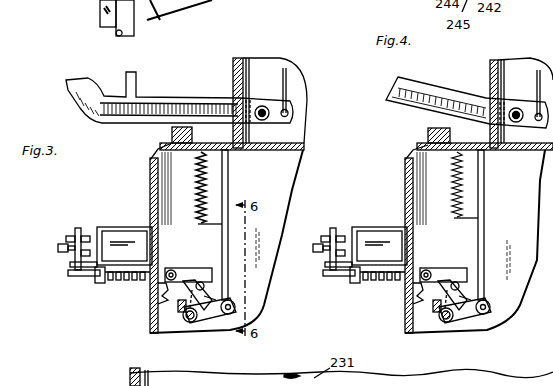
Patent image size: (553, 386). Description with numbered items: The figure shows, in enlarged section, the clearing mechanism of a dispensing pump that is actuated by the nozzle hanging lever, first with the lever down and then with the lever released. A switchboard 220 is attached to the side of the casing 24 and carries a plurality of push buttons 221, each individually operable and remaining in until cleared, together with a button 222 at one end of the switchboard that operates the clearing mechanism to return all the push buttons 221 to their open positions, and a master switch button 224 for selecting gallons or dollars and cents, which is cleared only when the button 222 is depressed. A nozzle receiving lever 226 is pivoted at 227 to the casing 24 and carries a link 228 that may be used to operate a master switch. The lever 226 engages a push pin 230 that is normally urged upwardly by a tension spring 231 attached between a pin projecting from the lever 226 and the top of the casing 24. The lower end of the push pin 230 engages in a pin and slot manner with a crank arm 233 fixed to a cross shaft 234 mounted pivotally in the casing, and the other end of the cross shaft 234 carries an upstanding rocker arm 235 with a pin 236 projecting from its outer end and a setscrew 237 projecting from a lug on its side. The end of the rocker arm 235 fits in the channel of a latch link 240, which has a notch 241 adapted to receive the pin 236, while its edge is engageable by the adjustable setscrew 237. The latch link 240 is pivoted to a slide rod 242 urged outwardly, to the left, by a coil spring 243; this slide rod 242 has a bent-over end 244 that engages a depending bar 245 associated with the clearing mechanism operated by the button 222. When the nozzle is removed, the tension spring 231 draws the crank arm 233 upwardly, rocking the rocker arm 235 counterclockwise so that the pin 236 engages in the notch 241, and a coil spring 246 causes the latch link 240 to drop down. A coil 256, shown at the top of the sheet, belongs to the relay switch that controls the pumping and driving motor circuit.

In FIG. 3, the casing 24 is at (304, 146).
In FIG. 4, the casing 24 is at (404, 193).
In FIG. 3, the switchboard 220 is at (124, 225).
In FIG. 4, the switchboard 220 is at (372, 226).
In FIG. 3, the push buttons 221 is at (68, 248).
In FIG. 4, the push buttons 221 is at (323, 249).
In FIG. 3, the button 222 is at (60, 244).
In FIG. 4, the button 222 is at (320, 244).
In FIG. 3, the master switch button 224 is at (80, 232).
In FIG. 4, the master switch button 224 is at (338, 236).
In FIG. 3, the nozzle receiving lever 226 is at (184, 100).
In FIG. 4, the nozzle receiving lever 226 is at (408, 82).
In FIG. 3, the pivot 227 is at (262, 105).
In FIG. 4, the pivot 227 is at (516, 107).
In FIG. 3, the link 228 is at (287, 80).
In FIG. 4, the link 228 is at (542, 90).
In FIG. 3, the push pin 230 is at (229, 176).
In FIG. 4, the push pin 230 is at (485, 193).
In FIG. 3, the tension spring 231 is at (197, 183).
In FIG. 4, the tension spring 231 is at (463, 184).
In FIG. 3, the crank arm 233 is at (226, 316).
In FIG. 4, the crank arm 233 is at (488, 314).
In FIG. 3, the cross shaft 234 is at (190, 323).
In FIG. 4, the cross shaft 234 is at (446, 323).
In FIG. 3, the rocker arm 235 is at (212, 302).
In FIG. 4, the rocker arm 235 is at (462, 302).
In FIG. 3, the pin 236 is at (205, 287).
In FIG. 4, the pin 236 is at (458, 291).
In FIG. 3, the setscrew 237 is at (176, 306).
In FIG. 4, the setscrew 237 is at (432, 306).
In FIG. 3, the latch link 240 is at (180, 268).
In FIG. 4, the latch link 240 is at (437, 268).
In FIG. 3, the notch 241 is at (193, 281).
In FIG. 4, the notch 241 is at (457, 285).
In FIG. 3, the slide rod 242 is at (97, 283).
In FIG. 4, the slide rod 242 is at (355, 283).
In FIG. 3, the coil spring 243 is at (118, 282).
In FIG. 4, the coil spring 243 is at (375, 282).
In FIG. 3, the bent-over end 244 is at (68, 274).
In FIG. 4, the bent-over end 244 is at (325, 278).
In FIG. 3, the depending bar 245 is at (70, 265).
In FIG. 4, the depending bar 245 is at (353, 265).
In FIG. 3, the coil spring 246 is at (165, 300).
In FIG. 4, the coil spring 246 is at (419, 302).
In FIG. 3, the coil 256 is at (90, 20).